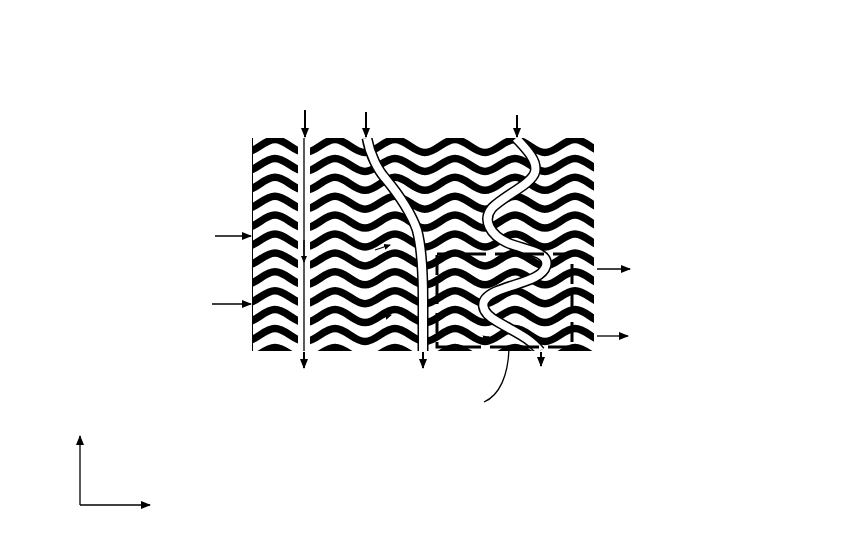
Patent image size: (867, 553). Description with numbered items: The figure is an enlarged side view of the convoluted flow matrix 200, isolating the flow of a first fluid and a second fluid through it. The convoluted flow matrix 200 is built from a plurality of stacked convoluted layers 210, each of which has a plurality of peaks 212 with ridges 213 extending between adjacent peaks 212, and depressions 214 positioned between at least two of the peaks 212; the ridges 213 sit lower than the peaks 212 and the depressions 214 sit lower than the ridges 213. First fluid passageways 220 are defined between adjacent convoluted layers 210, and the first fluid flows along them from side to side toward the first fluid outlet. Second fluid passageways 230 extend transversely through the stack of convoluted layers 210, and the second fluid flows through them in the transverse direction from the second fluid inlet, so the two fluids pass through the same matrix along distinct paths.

The convoluted flow matrix 200 is at (636, 126).
The convoluted layer 210 is at (250, 156).
The peak 212 is at (453, 141).
The ridge 213 is at (481, 157).
The depression 214 is at (481, 157).
The first fluid passageway 220 is at (273, 158).
The second fluid passageway 230 is at (270, 189).